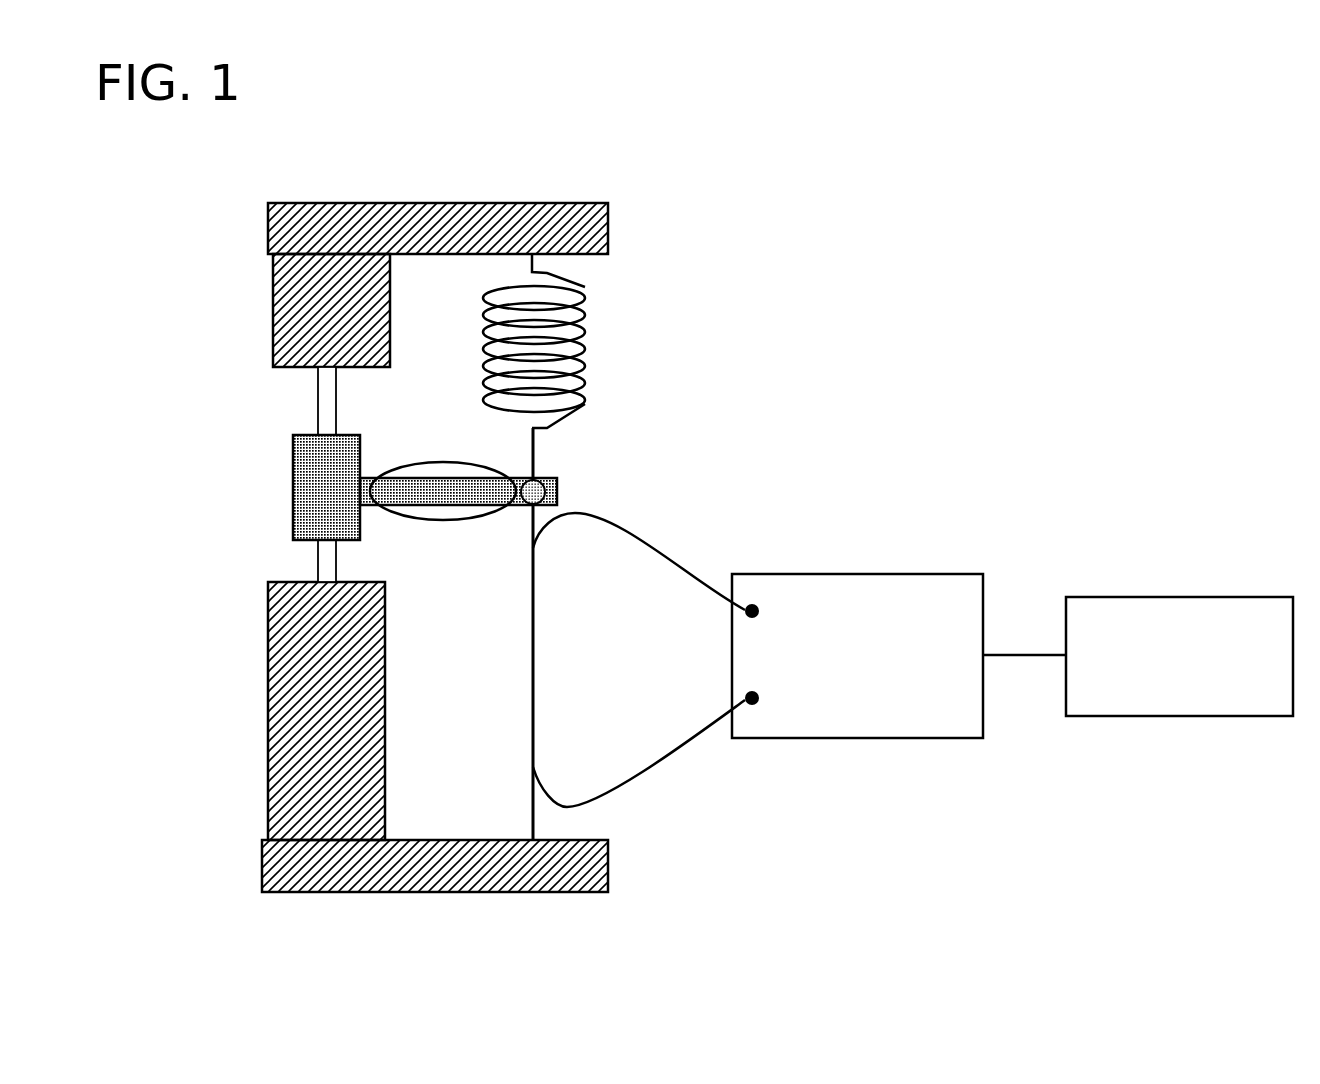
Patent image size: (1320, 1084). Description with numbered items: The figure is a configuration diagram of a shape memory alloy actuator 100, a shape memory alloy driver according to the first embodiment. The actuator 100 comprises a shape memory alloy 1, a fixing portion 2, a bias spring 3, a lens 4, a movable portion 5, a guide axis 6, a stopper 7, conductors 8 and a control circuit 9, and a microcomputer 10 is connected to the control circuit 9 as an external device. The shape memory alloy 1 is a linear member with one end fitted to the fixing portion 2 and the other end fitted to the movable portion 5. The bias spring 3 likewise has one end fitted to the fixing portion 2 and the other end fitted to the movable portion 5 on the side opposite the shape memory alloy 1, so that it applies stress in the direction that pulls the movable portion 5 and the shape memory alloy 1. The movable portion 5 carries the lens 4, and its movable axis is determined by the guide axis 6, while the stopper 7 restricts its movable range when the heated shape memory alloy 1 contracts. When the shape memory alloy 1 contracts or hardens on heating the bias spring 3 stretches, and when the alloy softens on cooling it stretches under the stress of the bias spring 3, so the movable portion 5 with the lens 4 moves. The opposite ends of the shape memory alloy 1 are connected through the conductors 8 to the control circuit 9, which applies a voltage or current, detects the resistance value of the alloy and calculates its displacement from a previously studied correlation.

The shape memory alloy actuator 100 is at (621, 181).
The shape memory alloy 1 is at (530, 668).
The fixing portion 2 is at (337, 202).
The bias spring 3 is at (585, 357).
The lens 4 is at (443, 462).
The movable portion 5 is at (292, 486).
The guide axis 6 is at (317, 401).
The stopper 7 is at (272, 302).
The conductors 8 is at (652, 551).
The control circuit 9 is at (853, 574).
The microcomputer 10 is at (1240, 598).